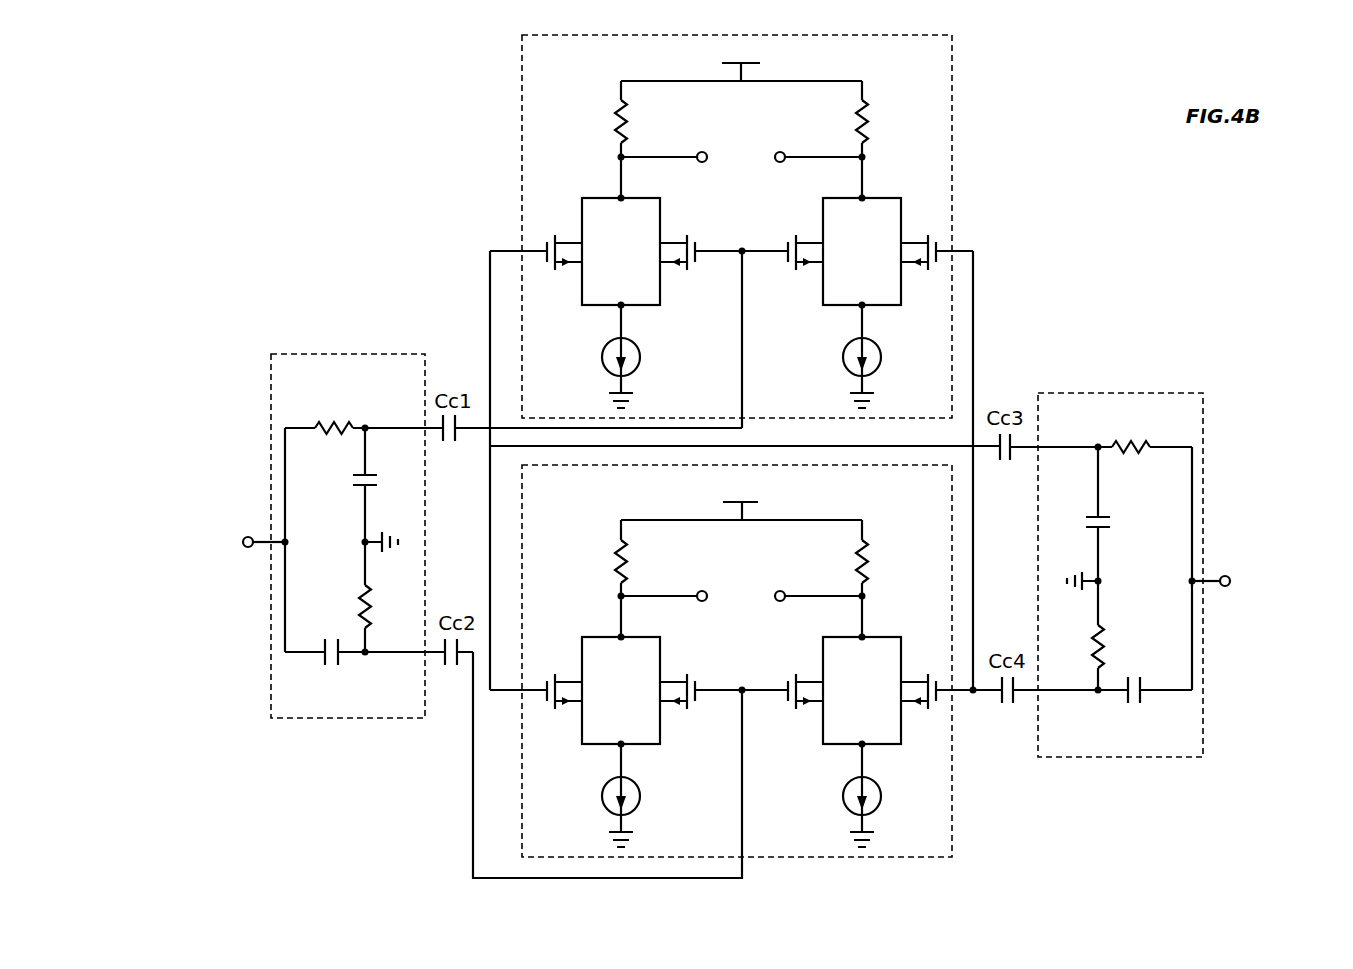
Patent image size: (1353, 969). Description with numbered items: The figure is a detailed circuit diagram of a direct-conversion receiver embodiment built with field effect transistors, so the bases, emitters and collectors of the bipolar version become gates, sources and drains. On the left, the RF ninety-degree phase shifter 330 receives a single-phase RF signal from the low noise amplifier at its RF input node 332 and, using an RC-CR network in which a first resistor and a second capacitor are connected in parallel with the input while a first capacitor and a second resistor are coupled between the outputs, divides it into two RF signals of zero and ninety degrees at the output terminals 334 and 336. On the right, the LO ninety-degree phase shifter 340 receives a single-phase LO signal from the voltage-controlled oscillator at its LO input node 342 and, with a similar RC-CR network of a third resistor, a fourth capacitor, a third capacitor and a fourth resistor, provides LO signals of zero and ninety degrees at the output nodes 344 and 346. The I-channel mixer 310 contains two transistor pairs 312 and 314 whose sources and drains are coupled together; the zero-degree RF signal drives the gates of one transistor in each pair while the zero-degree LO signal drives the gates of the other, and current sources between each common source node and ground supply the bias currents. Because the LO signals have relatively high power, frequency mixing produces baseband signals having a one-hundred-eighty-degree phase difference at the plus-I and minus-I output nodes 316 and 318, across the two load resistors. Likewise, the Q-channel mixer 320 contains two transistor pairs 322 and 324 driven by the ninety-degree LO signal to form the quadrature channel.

The I-channel mixer 310 is at (522, 86).
The transistor pair 312 is at (584, 198).
The transistor pair 314 is at (896, 198).
The +I output node 316 is at (703, 161).
The −I output node 318 is at (779, 161).
The Q-channel mixer 320 is at (953, 822).
The transistor pair 322 is at (584, 637).
The transistor pair 324 is at (897, 637).
The RF 90° phase shifter 330 is at (271, 376).
The RF input node 332 is at (252, 548).
The output terminal 334 is at (364, 431).
The output terminal 336 is at (364, 651).
The LO 90° phase shifter 340 is at (1203, 400).
The LO input node 342 is at (1226, 586).
The output node 344 is at (1100, 449).
The output node 346 is at (1100, 688).